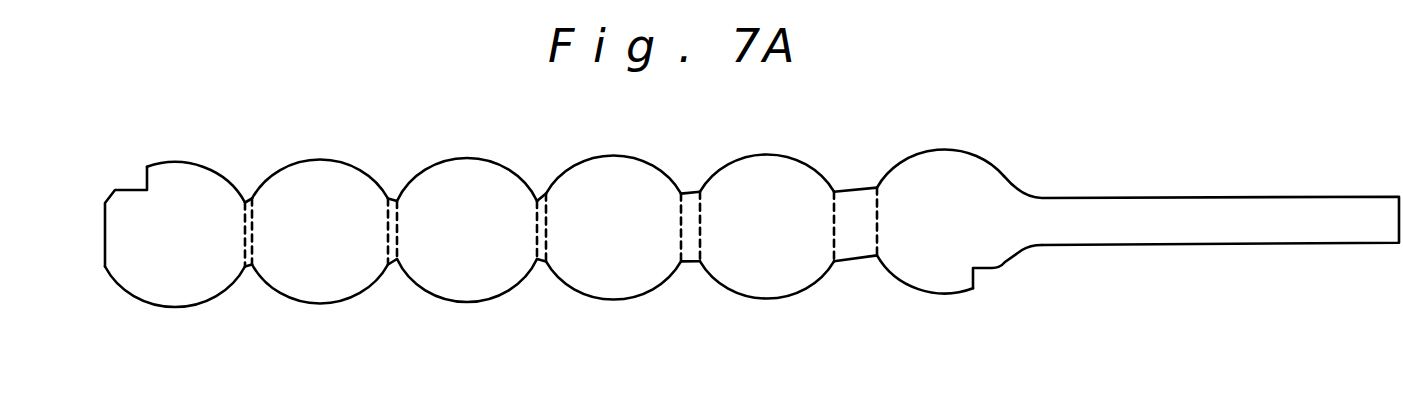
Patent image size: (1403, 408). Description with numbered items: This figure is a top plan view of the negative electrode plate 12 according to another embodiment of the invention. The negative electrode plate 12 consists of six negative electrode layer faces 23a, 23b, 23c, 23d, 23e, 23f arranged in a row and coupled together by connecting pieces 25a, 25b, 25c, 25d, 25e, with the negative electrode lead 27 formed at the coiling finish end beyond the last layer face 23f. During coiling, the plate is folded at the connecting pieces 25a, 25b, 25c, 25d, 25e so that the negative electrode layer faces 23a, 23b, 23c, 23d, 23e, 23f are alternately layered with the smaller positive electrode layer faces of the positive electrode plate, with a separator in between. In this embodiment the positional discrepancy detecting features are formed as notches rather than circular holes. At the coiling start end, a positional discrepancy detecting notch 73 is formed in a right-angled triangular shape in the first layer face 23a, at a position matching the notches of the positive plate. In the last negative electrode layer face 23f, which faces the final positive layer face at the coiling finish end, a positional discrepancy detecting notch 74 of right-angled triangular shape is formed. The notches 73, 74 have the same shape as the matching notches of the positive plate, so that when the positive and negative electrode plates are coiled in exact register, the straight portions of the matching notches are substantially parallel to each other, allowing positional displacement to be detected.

The negative electrode plate 12 is at (1112, 166).
The negative electrode layer face 23a is at (199, 174).
The negative electrode layer face 23b is at (343, 174).
The negative electrode layer face 23c is at (487, 177).
The negative electrode layer face 23d is at (630, 177).
The negative electrode layer face 23e is at (778, 179).
The negative electrode layer face 23f is at (970, 178).
The connecting piece 25a is at (252, 263).
The connecting piece 25b is at (398, 250).
The connecting piece 25c is at (543, 247).
The connecting piece 25d is at (695, 240).
The connecting piece 25e is at (862, 242).
The negative electrode lead 27 is at (1243, 210).
The notch 73 is at (128, 187).
The notch 74 is at (993, 270).